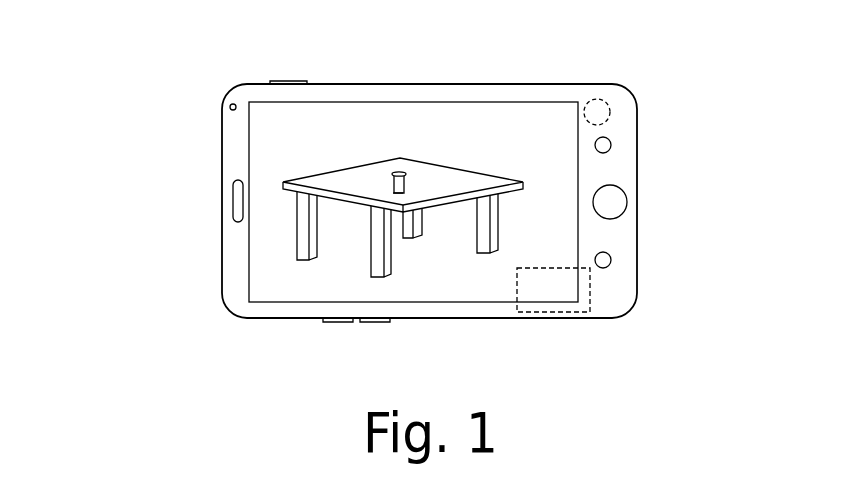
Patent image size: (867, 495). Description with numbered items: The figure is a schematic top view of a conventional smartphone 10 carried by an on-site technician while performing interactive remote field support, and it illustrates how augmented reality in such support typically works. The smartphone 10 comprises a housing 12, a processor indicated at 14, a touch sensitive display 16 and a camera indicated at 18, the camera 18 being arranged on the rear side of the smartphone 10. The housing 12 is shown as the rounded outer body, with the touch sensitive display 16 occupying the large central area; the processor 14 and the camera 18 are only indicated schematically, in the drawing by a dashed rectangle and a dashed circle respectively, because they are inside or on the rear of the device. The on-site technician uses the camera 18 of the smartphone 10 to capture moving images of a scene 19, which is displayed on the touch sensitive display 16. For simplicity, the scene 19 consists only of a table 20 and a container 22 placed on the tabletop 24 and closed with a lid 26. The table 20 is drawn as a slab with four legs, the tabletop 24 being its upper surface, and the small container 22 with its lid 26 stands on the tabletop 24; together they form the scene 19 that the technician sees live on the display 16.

The smartphone 10 is at (176, 251).
The housing 12 is at (625, 255).
The processor 14 is at (577, 312).
The touch sensitive display 16 is at (270, 142).
The camera 18 is at (610, 112).
The scene 19 is at (384, 217).
The table 20 is at (297, 235).
The container 22 is at (392, 186).
The tabletop 24 is at (464, 176).
The lid 26 is at (400, 170).